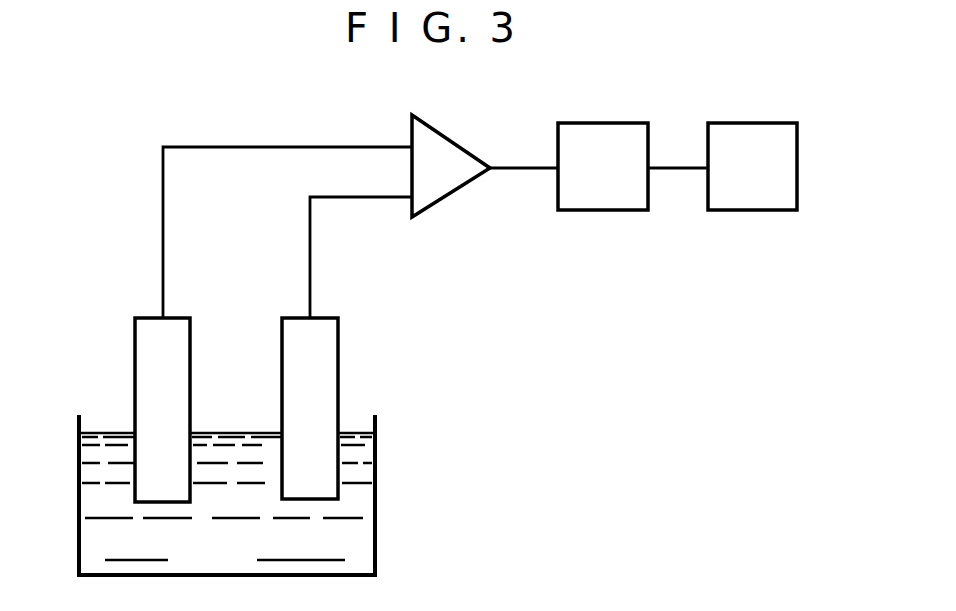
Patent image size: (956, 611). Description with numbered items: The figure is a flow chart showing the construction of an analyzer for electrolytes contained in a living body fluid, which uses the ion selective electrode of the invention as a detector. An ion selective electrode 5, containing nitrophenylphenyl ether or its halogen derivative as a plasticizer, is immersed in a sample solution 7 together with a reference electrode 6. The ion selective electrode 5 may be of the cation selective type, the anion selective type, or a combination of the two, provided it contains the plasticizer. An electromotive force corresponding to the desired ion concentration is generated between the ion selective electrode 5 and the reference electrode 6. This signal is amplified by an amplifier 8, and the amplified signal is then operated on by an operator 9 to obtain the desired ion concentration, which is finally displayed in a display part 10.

The ion selective electrode 5 is at (317, 339).
The reference electrode 6 is at (147, 339).
The sample solution 7 is at (342, 546).
The amplifier 8 is at (445, 198).
The operator 9 is at (615, 210).
The display part 10 is at (762, 210).